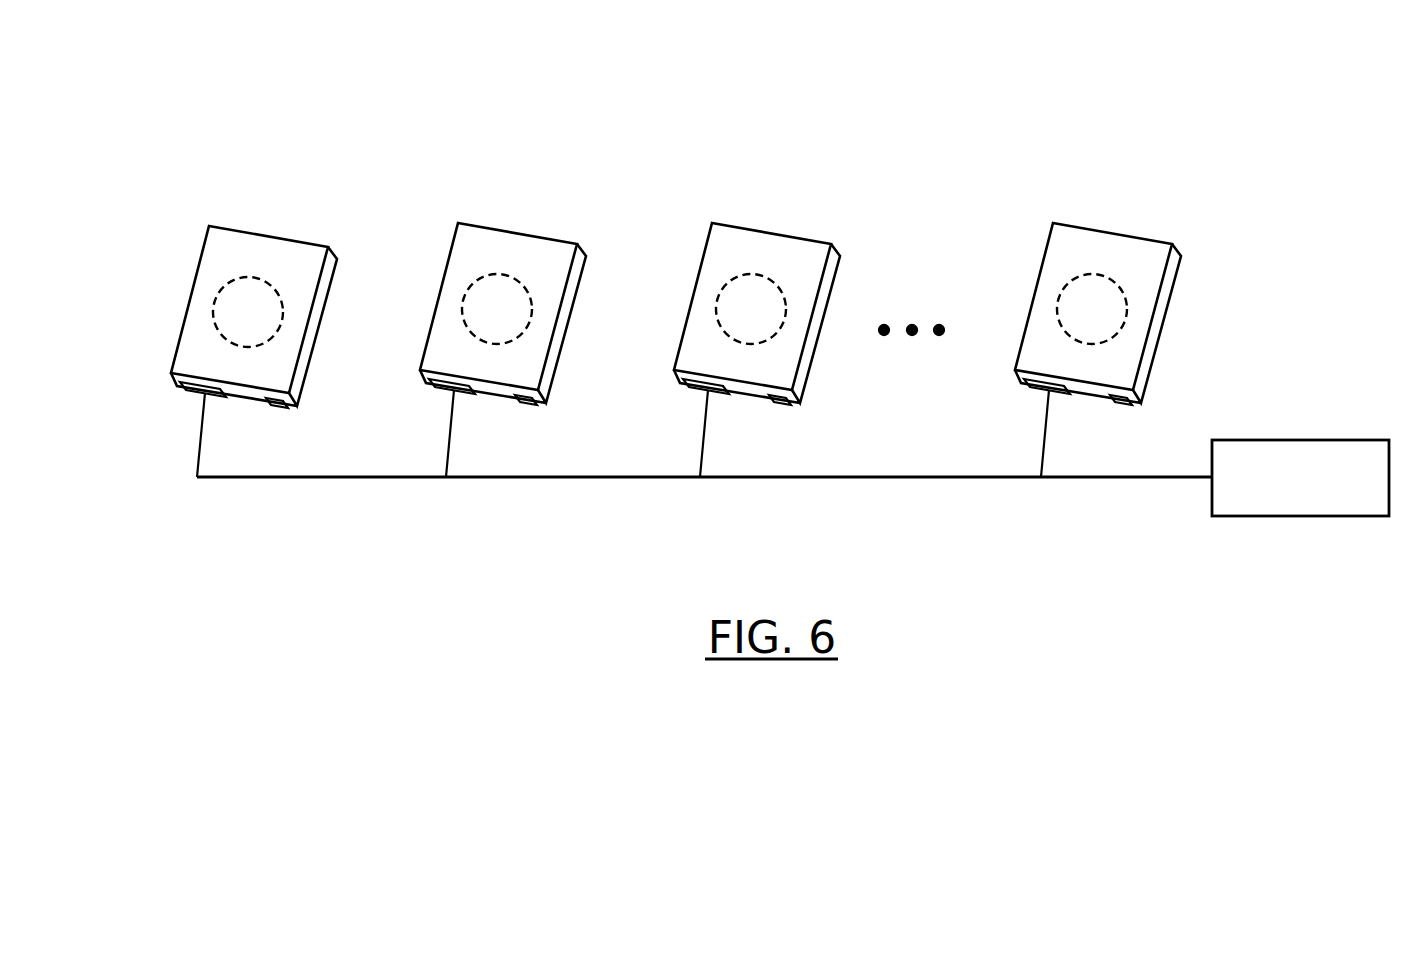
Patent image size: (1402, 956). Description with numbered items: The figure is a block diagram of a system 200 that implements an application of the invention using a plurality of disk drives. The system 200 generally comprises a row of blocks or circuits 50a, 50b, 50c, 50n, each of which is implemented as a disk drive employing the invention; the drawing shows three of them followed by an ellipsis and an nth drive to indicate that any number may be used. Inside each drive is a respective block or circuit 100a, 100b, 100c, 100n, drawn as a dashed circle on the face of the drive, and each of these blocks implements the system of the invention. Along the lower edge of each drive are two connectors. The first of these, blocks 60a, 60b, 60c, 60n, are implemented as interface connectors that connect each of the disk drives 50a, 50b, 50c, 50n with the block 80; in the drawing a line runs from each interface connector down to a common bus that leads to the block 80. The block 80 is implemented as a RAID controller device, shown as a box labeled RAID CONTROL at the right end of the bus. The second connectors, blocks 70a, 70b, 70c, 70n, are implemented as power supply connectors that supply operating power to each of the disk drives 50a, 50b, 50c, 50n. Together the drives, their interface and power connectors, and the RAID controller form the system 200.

The system 200 is at (455, 52).
The disk drive 50a is at (190, 290).
The disk drive 50b is at (481, 313).
The disk drive 50c is at (735, 313).
The disk drive 50n is at (1076, 313).
The system block 100a is at (248, 290).
The system block 100b is at (531, 270).
The system block 100c is at (784, 270).
The system block 100n is at (1126, 270).
The interface connector 60a is at (192, 398).
The interface connector 60b is at (430, 428).
The interface connector 60c is at (684, 428).
The interface connector 60n is at (1025, 428).
The power supply connector 70a is at (278, 408).
The power supply connector 70b is at (549, 422).
The power supply connector 70c is at (802, 422).
The power supply connector 70n is at (1144, 422).
The RAID controller device 80 is at (1275, 439).